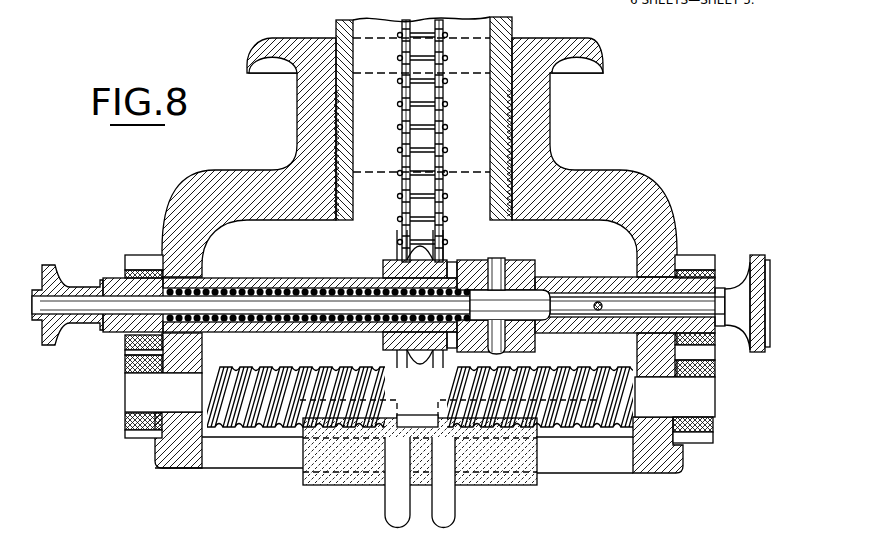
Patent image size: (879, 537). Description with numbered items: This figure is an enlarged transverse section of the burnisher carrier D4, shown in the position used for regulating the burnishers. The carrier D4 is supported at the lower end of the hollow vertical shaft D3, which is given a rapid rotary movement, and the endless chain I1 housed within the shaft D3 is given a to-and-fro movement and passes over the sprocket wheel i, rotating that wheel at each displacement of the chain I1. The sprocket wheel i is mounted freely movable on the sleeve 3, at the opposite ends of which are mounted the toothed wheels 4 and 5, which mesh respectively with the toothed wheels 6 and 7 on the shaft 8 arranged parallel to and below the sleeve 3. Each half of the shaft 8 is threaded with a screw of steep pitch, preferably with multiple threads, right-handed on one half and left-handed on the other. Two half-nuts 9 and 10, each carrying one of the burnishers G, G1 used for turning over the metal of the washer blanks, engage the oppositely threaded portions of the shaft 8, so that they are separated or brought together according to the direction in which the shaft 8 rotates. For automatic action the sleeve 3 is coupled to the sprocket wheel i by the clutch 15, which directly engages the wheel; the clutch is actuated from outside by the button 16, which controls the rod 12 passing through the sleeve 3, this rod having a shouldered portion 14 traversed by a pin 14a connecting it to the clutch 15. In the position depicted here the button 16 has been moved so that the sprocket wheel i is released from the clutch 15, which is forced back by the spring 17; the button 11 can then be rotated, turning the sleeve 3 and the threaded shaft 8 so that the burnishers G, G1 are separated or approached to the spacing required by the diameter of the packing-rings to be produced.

The hollow vertical shaft D3 is at (336, 28).
The burnisher carrier D4 is at (578, 177).
The endless chain I1 is at (397, 107).
The sprocket wheel i is at (385, 262).
The sleeve 3 is at (283, 281).
The toothed wheel 4 is at (143, 268).
The toothed wheel 5 is at (703, 270).
The toothed wheel 6 is at (135, 431).
The toothed wheel 7 is at (715, 427).
The shaft 8 is at (135, 391).
The half-nut 9 is at (340, 477).
The half-nut 10 is at (510, 486).
The button 11 is at (743, 318).
The rod 12 is at (240, 300).
The shouldered portion 14 is at (547, 277).
The pin 14a is at (535, 347).
The clutch 15 is at (522, 260).
The button 16 is at (50, 264).
The spring 17 is at (257, 326).
The burnisher G is at (393, 513).
The burnisher G1 is at (443, 510).